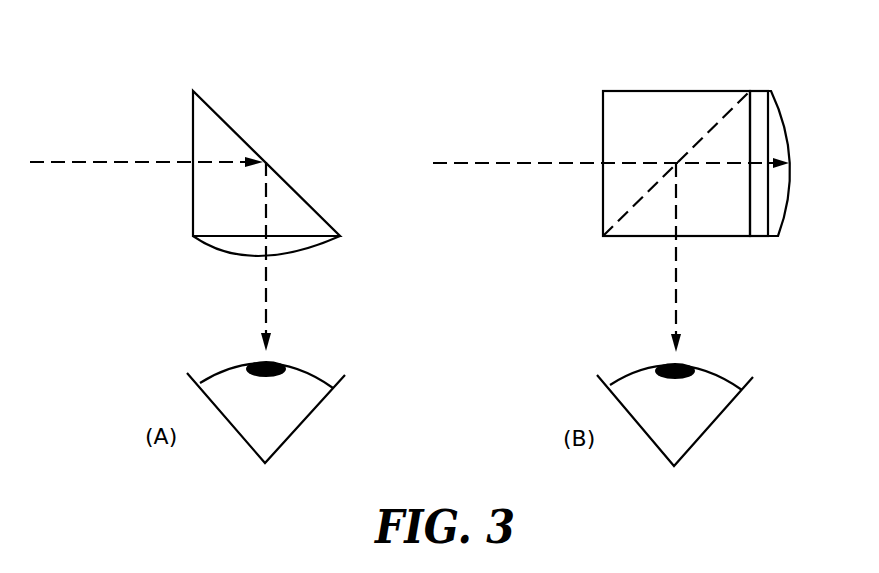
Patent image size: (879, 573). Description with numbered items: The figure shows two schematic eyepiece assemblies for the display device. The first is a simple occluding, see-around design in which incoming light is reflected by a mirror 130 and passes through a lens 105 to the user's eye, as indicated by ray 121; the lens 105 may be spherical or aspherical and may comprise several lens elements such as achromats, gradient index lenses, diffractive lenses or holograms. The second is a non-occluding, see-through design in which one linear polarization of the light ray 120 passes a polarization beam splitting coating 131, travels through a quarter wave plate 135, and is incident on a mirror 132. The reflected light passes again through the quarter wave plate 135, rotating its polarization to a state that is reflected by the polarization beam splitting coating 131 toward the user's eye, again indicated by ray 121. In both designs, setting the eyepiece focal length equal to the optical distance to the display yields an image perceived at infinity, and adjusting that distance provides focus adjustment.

In FIG. 3A, the lens 105 is at (210, 246).
In FIG. 3A, the light ray 120 is at (146, 149).
In FIG. 3B, the light ray 120 is at (611, 150).
In FIG. 3A, the ray 121 is at (266, 282).
In FIG. 3B, the ray 121 is at (676, 290).
In FIG. 3A, the mirror 130 is at (216, 113).
In FIG. 3B, the polarization beam splitting coating 131 is at (718, 123).
In FIG. 3B, the mirror 132 is at (790, 138).
In FIG. 3B, the quarter wave plate 135 is at (762, 91).